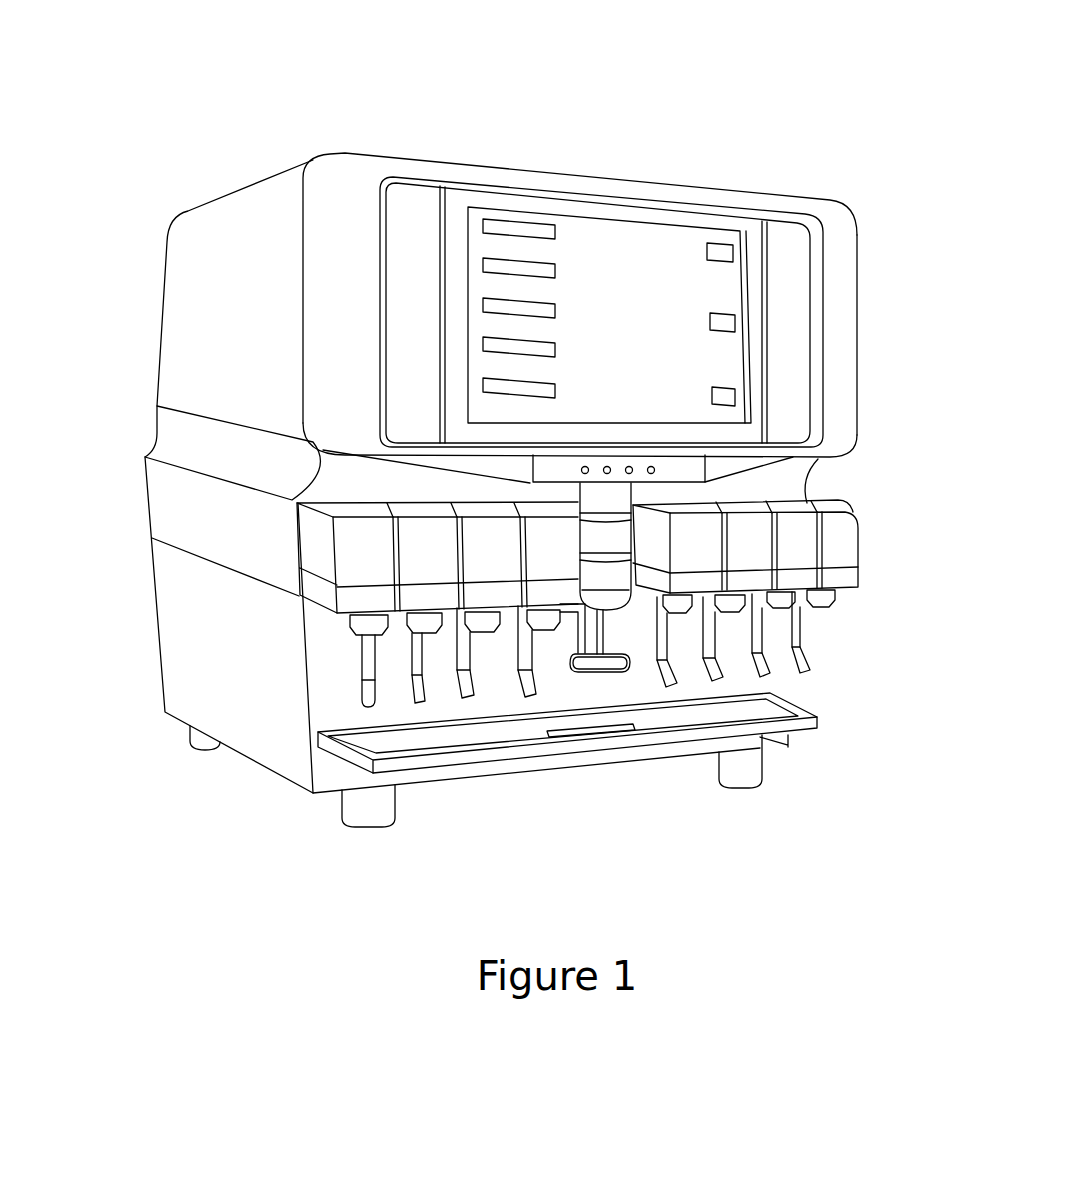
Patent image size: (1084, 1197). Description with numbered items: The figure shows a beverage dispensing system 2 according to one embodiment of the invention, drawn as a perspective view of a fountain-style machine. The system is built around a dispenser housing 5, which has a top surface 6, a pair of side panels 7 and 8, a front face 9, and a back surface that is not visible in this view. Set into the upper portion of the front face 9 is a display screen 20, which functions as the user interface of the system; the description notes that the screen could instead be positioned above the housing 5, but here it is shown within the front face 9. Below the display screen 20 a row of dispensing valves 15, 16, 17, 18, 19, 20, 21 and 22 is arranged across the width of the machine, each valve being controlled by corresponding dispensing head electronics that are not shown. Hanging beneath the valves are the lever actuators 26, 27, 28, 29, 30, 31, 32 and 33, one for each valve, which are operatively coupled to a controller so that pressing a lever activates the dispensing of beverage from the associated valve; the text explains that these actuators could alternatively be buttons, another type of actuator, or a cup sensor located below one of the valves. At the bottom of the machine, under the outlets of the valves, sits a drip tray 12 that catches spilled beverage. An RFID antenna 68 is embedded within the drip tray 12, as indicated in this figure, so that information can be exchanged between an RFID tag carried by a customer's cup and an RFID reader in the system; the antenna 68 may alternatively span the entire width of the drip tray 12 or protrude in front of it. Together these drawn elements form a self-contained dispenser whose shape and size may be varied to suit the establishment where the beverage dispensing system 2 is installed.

The beverage dispensing system 2 is at (361, 90).
The dispenser housing 5 is at (153, 478).
The top surface 6 is at (262, 182).
The side panel 7 is at (195, 623).
The side panel 8 is at (857, 323).
The front face 9 is at (347, 180).
The drip tray 12 is at (373, 748).
The valve 15 is at (358, 625).
The valve 16 is at (427, 628).
The valve 17 is at (483, 622).
The valve 18 is at (545, 623).
The valve 19 is at (678, 617).
The display screen 20 is at (597, 232).
The valve 21 is at (777, 602).
The valve 22 is at (823, 605).
The lever actuator 26 is at (367, 695).
The lever actuator 27 is at (415, 705).
The lever actuator 28 is at (465, 700).
The lever actuator 29 is at (523, 700).
The lever actuator 30 is at (667, 687).
The lever actuator 31 is at (710, 680).
The lever actuator 32 is at (760, 677).
The lever actuator 33 is at (807, 673).
The antenna 68 is at (595, 737).